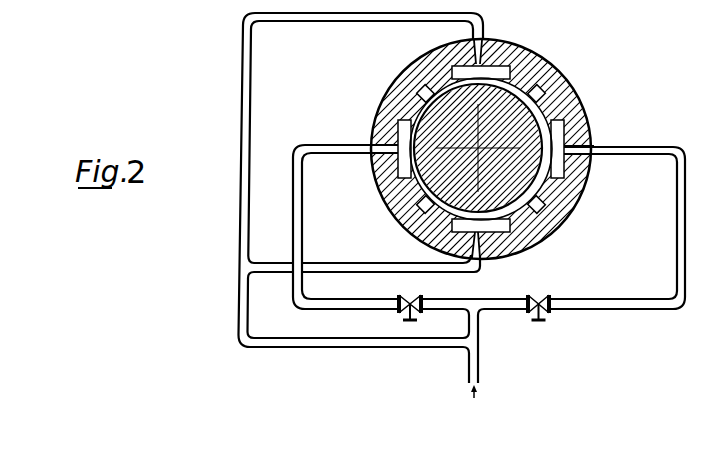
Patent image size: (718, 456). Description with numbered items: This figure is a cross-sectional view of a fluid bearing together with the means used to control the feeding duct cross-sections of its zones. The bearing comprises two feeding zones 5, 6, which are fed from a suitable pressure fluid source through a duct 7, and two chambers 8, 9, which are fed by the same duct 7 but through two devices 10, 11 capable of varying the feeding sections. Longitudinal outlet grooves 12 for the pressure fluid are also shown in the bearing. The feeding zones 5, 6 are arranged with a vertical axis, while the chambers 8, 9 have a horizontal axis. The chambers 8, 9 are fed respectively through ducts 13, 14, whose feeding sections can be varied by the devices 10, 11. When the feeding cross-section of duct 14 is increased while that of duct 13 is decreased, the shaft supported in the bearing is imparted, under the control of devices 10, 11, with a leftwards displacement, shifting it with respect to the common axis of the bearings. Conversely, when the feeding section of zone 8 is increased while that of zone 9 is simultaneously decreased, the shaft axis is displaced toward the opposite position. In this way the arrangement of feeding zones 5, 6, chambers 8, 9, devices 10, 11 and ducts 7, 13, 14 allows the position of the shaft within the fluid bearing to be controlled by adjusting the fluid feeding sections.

The feeding zone 5 is at (487, 54).
The feeding zone 6 is at (486, 252).
The duct 7 is at (479, 356).
The chamber 8 is at (380, 132).
The chamber 9 is at (582, 138).
The device 10 is at (406, 295).
The device 11 is at (541, 290).
The longitudinal outlet groove 12 is at (418, 92).
The duct 13 is at (302, 178).
The duct 14 is at (690, 190).